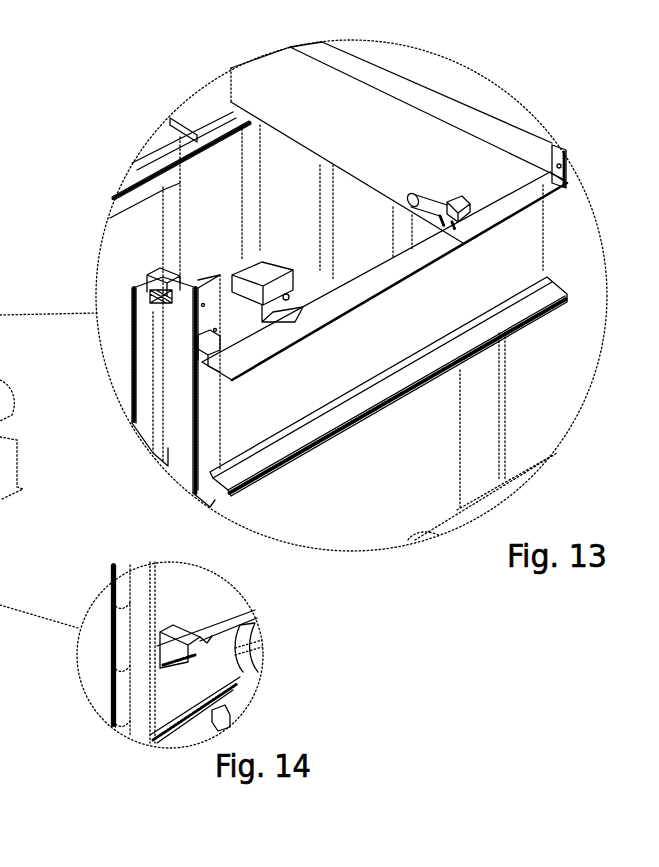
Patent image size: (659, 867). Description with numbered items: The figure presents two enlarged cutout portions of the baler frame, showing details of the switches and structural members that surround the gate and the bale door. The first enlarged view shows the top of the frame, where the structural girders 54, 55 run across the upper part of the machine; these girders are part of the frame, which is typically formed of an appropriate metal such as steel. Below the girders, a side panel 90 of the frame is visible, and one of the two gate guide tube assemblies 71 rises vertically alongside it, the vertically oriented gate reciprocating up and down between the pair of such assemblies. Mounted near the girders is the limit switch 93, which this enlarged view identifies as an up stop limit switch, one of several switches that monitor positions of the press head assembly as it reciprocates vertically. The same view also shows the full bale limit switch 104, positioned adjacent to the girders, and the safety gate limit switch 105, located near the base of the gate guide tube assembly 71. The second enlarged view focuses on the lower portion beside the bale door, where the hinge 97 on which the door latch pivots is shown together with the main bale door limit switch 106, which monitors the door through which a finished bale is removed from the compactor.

In FIG. 13, the girder 54 is at (456, 306).
In FIG. 13, the girder 55 is at (320, 123).
In FIG. 13, the gate guide tube assembly 71 is at (148, 386).
In FIG. 13, the side panel 90 is at (398, 485).
In FIG. 13, the limit switch 93 is at (271, 268).
In FIG. 14, the hinge 97 is at (118, 648).
In FIG. 13, the full bale limit switch 104 is at (458, 202).
In FIG. 13, the safety gate limit switch 105 is at (207, 348).
In FIG. 14, the main bale door limit switch 106 is at (168, 648).